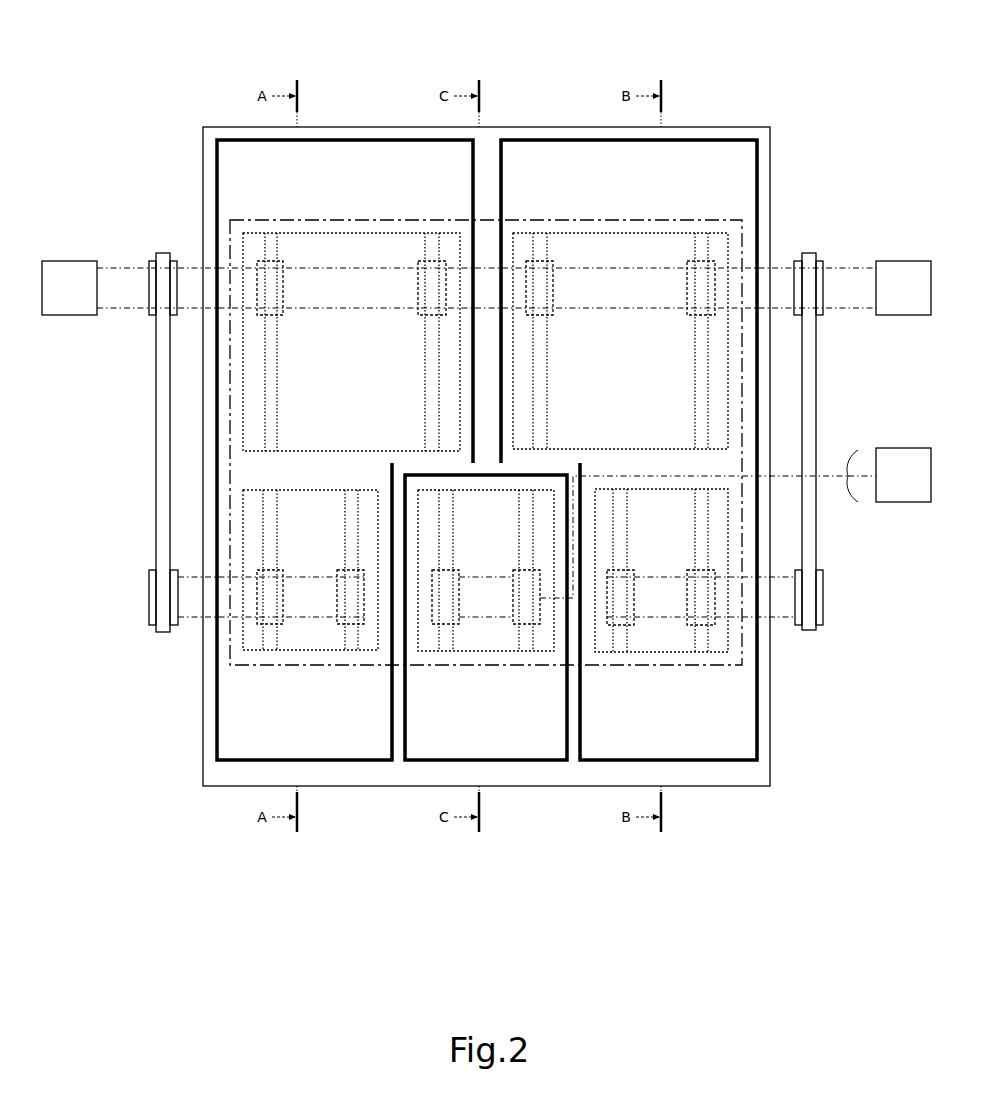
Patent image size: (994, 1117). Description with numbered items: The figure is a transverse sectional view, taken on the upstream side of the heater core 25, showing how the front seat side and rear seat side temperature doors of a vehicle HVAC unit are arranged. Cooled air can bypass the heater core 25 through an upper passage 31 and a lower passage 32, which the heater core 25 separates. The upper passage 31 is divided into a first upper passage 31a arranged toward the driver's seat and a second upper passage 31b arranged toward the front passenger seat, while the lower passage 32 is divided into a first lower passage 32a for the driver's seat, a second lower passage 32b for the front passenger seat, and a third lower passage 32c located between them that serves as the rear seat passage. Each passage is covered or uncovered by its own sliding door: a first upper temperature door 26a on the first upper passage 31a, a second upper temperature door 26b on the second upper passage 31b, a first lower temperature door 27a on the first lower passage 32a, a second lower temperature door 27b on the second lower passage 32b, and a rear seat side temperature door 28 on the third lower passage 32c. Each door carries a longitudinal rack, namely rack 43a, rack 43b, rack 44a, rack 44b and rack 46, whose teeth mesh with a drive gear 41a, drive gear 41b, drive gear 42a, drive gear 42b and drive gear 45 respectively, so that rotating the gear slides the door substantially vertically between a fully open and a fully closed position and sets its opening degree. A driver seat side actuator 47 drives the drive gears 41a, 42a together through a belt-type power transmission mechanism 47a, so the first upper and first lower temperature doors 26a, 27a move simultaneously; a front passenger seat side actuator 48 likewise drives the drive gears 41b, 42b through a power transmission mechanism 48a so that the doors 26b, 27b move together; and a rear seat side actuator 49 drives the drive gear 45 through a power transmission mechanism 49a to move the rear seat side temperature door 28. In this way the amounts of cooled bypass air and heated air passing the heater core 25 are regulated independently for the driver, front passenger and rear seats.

The heater core 25 is at (713, 220).
The first upper temperature door 26a is at (353, 233).
The second upper temperature door 26b is at (622, 233).
The first lower temperature door 27a is at (310, 650).
The second lower temperature door 27b is at (660, 652).
The rear seat side temperature door 28 is at (486, 651).
The upper passage 31 is at (487, 238).
The first upper passage 31a is at (336, 174).
The second upper passage 31b is at (601, 174).
The lower passage 32 is at (487, 688).
The first lower passage 32a is at (485, 887).
The second lower passage 32b is at (487, 887).
The third lower passage 32c is at (485, 887).
The drive gear 41a is at (407, 328).
The drive gear 41b is at (680, 328).
The drive gear 42a is at (277, 576).
The drive gear 42b is at (627, 576).
The rack 43a is at (400, 386).
The rack 43b is at (670, 386).
The rack 44a is at (275, 533).
The rack 44b is at (625, 533).
The drive gear 45 is at (460, 576).
The rack 46 is at (455, 533).
The driver seat side actuator 47 is at (67, 261).
The power transmission mechanism 47a is at (154, 404).
The front passenger seat side actuator 48 is at (903, 261).
The power transmission mechanism 48a is at (819, 369).
The rear seat side actuator 49 is at (903, 448).
The power transmission mechanism 49a is at (778, 475).